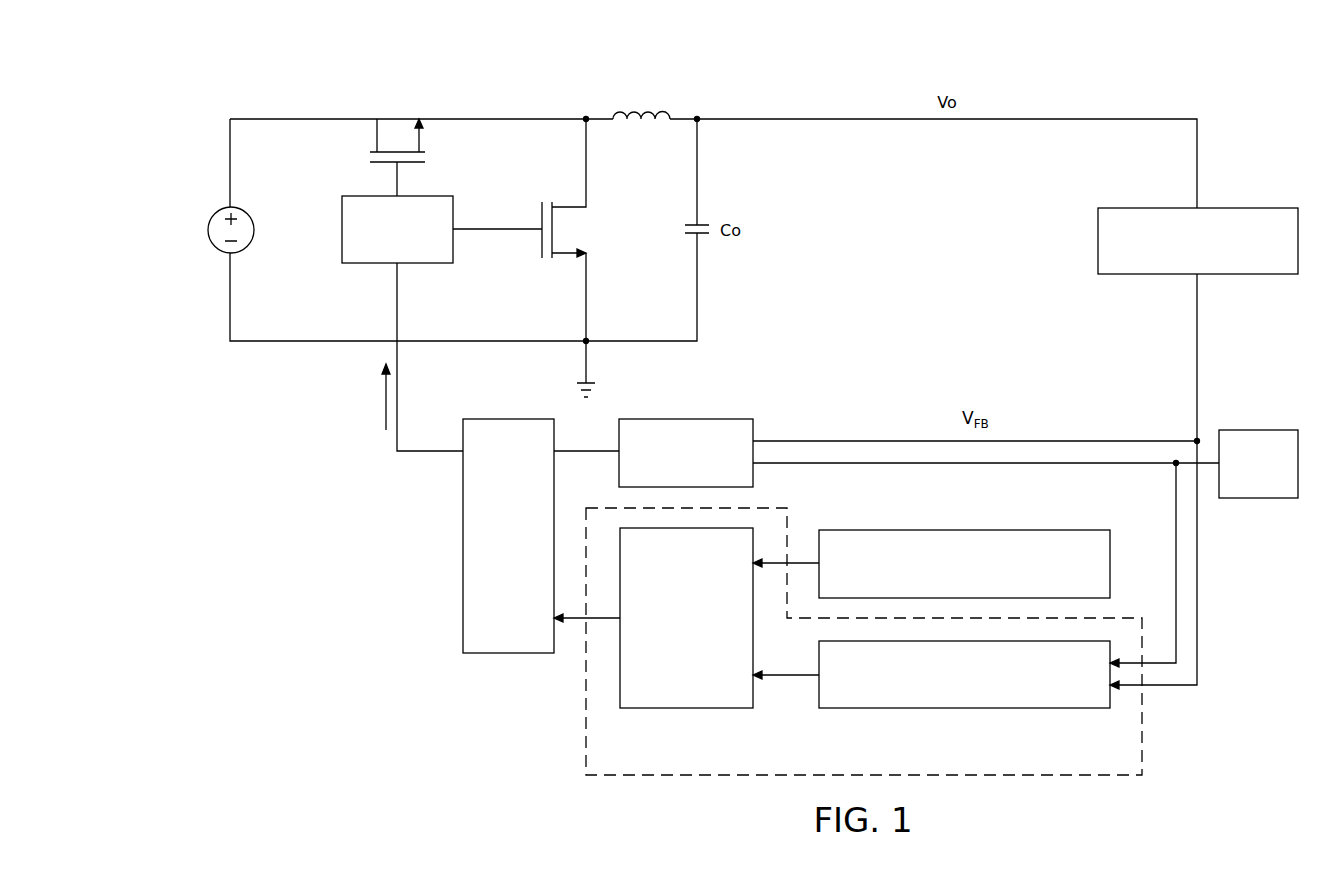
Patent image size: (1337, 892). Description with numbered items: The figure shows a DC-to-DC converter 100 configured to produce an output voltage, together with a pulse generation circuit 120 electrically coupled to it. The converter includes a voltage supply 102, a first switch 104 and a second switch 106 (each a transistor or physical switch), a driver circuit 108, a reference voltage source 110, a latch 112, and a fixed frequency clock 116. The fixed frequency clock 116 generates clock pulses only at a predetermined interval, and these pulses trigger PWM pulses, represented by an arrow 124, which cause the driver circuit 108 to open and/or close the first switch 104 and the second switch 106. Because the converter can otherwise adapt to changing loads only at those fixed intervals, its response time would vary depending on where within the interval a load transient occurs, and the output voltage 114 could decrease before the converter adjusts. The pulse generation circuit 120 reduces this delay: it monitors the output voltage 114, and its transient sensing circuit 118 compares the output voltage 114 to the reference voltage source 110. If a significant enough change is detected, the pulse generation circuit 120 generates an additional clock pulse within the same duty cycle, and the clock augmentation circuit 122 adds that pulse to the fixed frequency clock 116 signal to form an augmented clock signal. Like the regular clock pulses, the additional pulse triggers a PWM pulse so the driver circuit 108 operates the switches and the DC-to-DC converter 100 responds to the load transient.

The DC-to-DC converter 100 is at (487, 74).
The voltage supply 102 is at (208, 229).
The first switch 104 is at (386, 167).
The second switch 106 is at (540, 214).
The driver circuit 108 is at (376, 265).
The reference voltage source 110 is at (1258, 498).
The latch 112 is at (463, 537).
The output voltage 114 is at (1018, 118).
The fixed frequency clock 116 is at (965, 530).
The transient sensing circuit 118 is at (964, 708).
The pulse generation circuit 120 is at (1145, 711).
The clock augmentation circuit 122 is at (687, 708).
The arrow representing PWM pulses 124 is at (383, 397).